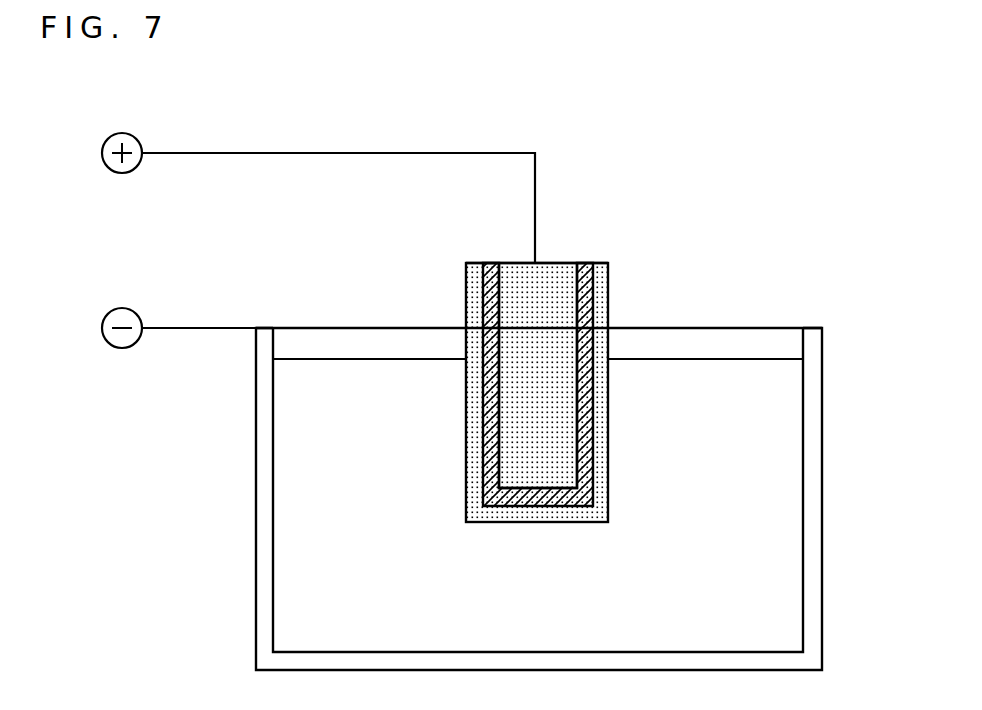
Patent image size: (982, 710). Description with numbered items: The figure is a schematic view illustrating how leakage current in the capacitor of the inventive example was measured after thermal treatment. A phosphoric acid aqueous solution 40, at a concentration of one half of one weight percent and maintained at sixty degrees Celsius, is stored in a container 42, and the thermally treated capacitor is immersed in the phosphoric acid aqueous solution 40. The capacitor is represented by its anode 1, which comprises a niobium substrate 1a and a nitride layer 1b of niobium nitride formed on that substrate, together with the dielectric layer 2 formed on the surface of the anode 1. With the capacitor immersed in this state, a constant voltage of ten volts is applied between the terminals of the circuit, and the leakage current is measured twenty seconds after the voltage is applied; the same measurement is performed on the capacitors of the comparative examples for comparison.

The anode 1 is at (567, 338).
The niobium substrate 1a is at (554, 349).
The nitride layer 1b is at (597, 263).
The dielectric layer 2 is at (598, 325).
The phosphoric acid aqueous solution 40 is at (787, 626).
The container 42 is at (813, 407).